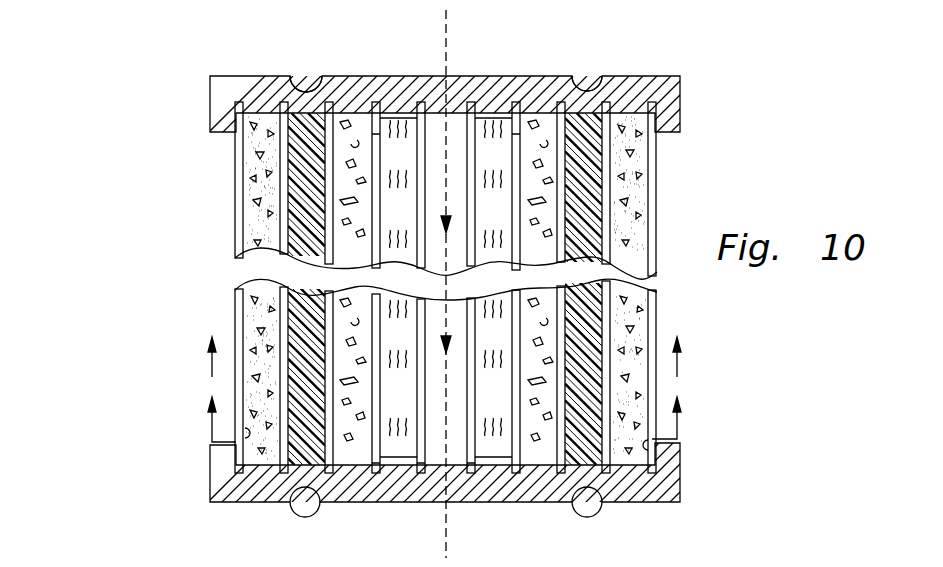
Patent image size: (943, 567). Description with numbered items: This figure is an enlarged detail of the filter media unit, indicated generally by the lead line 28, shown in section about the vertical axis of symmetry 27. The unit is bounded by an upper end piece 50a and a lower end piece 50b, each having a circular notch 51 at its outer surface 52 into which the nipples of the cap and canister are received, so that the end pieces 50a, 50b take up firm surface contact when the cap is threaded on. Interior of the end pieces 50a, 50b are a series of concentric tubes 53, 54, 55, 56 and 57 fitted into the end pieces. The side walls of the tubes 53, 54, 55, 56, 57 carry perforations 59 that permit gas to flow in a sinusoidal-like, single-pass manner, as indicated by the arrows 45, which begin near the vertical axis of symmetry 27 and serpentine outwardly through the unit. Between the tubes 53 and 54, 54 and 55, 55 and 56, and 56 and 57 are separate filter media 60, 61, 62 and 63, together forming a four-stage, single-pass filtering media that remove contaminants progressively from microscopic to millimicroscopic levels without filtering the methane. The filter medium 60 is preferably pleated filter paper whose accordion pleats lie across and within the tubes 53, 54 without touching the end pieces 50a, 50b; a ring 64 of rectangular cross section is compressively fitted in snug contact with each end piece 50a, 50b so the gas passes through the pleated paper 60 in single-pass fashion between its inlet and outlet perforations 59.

The vertical axis of symmetry 27 is at (452, 20).
The filter assembly 28 is at (197, 76).
The arrows 45 is at (678, 436).
The end piece 50a is at (210, 120).
The end piece 50b is at (210, 480).
The circular notch 51 is at (306, 80).
The outer surface 52 is at (660, 78).
The tube 53 is at (440, 150).
The tube 54 is at (505, 112).
The tube 55 is at (548, 143).
The tube 56 is at (584, 143).
The tube 57 is at (657, 182).
The perforations 59 is at (365, 128).
The filter medium 60 is at (388, 133).
The filter medium 61 is at (350, 165).
The filter medium 62 is at (297, 197).
The filter medium 63 is at (258, 233).
The ring 64 is at (507, 143).